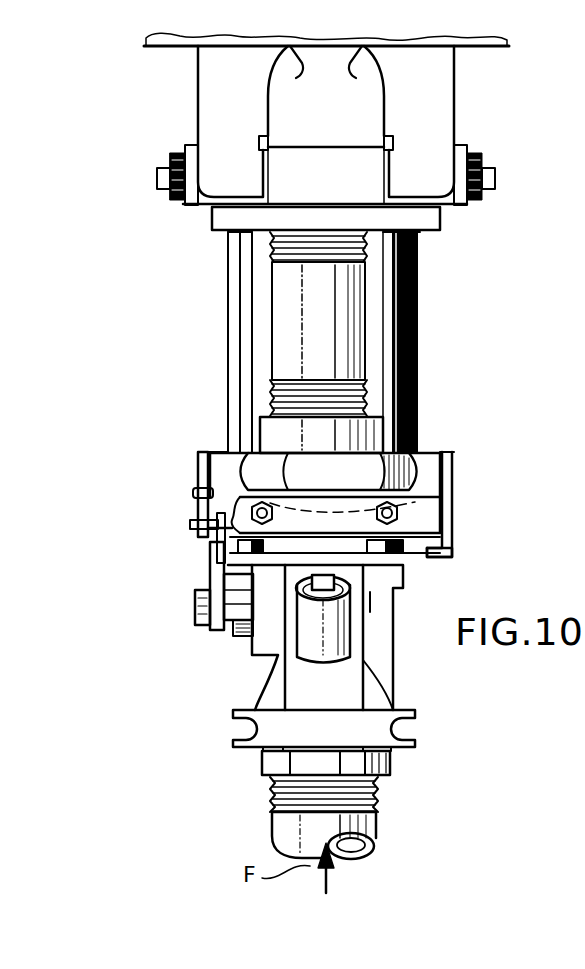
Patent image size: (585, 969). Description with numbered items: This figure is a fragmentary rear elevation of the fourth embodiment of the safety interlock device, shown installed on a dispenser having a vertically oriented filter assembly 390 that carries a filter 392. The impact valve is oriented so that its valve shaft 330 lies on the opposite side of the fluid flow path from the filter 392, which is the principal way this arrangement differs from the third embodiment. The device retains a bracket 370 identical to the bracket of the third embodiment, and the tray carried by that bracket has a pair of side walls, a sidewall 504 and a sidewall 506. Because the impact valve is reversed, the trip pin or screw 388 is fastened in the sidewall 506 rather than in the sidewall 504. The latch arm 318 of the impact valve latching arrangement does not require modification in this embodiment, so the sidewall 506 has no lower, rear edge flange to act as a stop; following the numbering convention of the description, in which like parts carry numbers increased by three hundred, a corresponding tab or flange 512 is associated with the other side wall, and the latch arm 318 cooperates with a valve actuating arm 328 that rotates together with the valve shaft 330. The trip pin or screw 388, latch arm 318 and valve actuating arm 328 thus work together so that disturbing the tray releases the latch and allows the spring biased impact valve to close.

The filter assembly 390 is at (455, 107).
The filter 392 is at (418, 330).
The sidewall 504 is at (455, 468).
The bracket foot 512 is at (440, 556).
The sidewall 506 is at (200, 464).
The bracket 370 is at (420, 518).
The trip pin or screw 388 is at (193, 522).
The latch arm 318 is at (217, 538).
The lock nut 328 is at (210, 563).
The valve shaft 330 is at (232, 625).